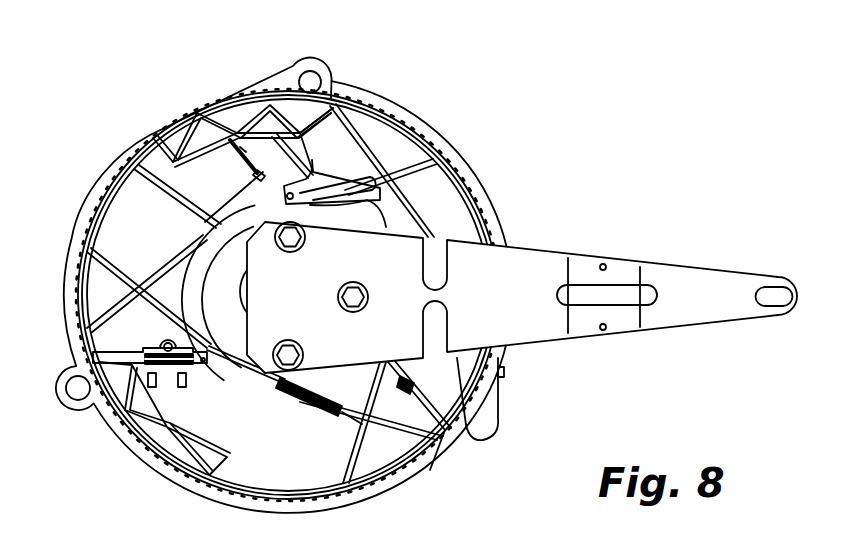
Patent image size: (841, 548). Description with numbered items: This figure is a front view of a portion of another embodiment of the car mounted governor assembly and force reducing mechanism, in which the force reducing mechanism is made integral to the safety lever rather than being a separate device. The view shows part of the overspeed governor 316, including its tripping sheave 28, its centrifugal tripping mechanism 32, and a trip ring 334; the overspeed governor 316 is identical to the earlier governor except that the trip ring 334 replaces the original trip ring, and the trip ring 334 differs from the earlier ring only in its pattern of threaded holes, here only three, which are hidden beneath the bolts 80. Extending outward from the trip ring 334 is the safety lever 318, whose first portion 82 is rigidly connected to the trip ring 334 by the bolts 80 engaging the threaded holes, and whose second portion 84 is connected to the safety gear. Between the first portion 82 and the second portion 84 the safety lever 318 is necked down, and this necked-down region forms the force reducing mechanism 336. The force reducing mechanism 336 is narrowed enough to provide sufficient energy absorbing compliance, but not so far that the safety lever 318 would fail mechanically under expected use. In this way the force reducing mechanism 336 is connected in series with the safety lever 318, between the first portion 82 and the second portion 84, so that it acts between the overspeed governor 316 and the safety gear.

The overspeed governor 316 is at (366, 82).
The tripping sheave 28 is at (425, 127).
The centrifugal tripping mechanism 32 is at (455, 176).
The trip ring 334 is at (232, 268).
The safety lever 318 is at (656, 248).
The bolts 80 is at (292, 353).
The second portion 84 is at (652, 327).
The force reducing mechanism 336 is at (493, 427).
The first portion 82 is at (439, 439).